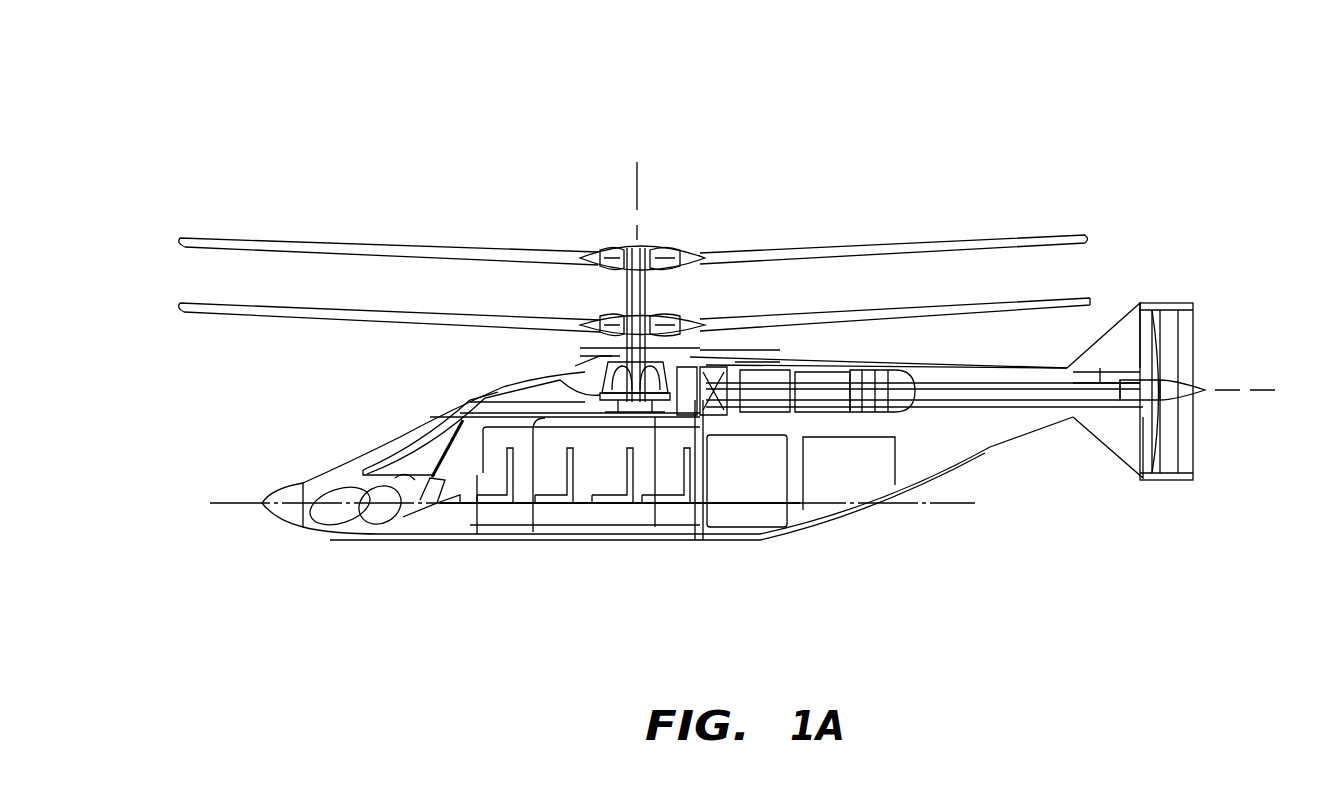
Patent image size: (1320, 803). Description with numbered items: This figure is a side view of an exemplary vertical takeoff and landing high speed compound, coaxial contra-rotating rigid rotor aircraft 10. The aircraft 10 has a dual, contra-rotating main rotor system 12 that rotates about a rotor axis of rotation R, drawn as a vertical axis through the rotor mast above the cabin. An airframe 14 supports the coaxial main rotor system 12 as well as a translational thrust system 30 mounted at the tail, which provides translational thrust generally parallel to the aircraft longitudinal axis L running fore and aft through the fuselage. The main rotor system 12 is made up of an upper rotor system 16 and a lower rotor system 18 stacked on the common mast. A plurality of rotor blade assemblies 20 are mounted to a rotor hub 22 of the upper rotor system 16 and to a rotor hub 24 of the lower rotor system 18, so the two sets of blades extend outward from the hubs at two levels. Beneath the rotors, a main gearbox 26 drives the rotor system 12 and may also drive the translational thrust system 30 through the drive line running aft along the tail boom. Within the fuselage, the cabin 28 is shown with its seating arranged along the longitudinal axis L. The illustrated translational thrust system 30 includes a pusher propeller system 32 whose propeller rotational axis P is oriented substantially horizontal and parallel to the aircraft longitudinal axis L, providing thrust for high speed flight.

The rotary wing aircraft 10 is at (892, 132).
The main rotor system 12 is at (692, 245).
The airframe 14 is at (465, 398).
The upper rotor system 16 is at (612, 243).
The lower rotor system 18 is at (672, 320).
The rotor blade assemblies 20 is at (806, 216).
The rotor hub 22 is at (656, 250).
The rotor hub 24 is at (616, 314).
The main gearbox 26 is at (575, 366).
The fuselage cabin 28 is at (540, 532).
The translational thrust system 30 is at (1213, 318).
The pusher propeller system 32 is at (1193, 350).
The rotor axis of rotation R is at (640, 160).
The aircraft longitudinal axis L is at (921, 510).
The propeller rotational axis P is at (1233, 398).